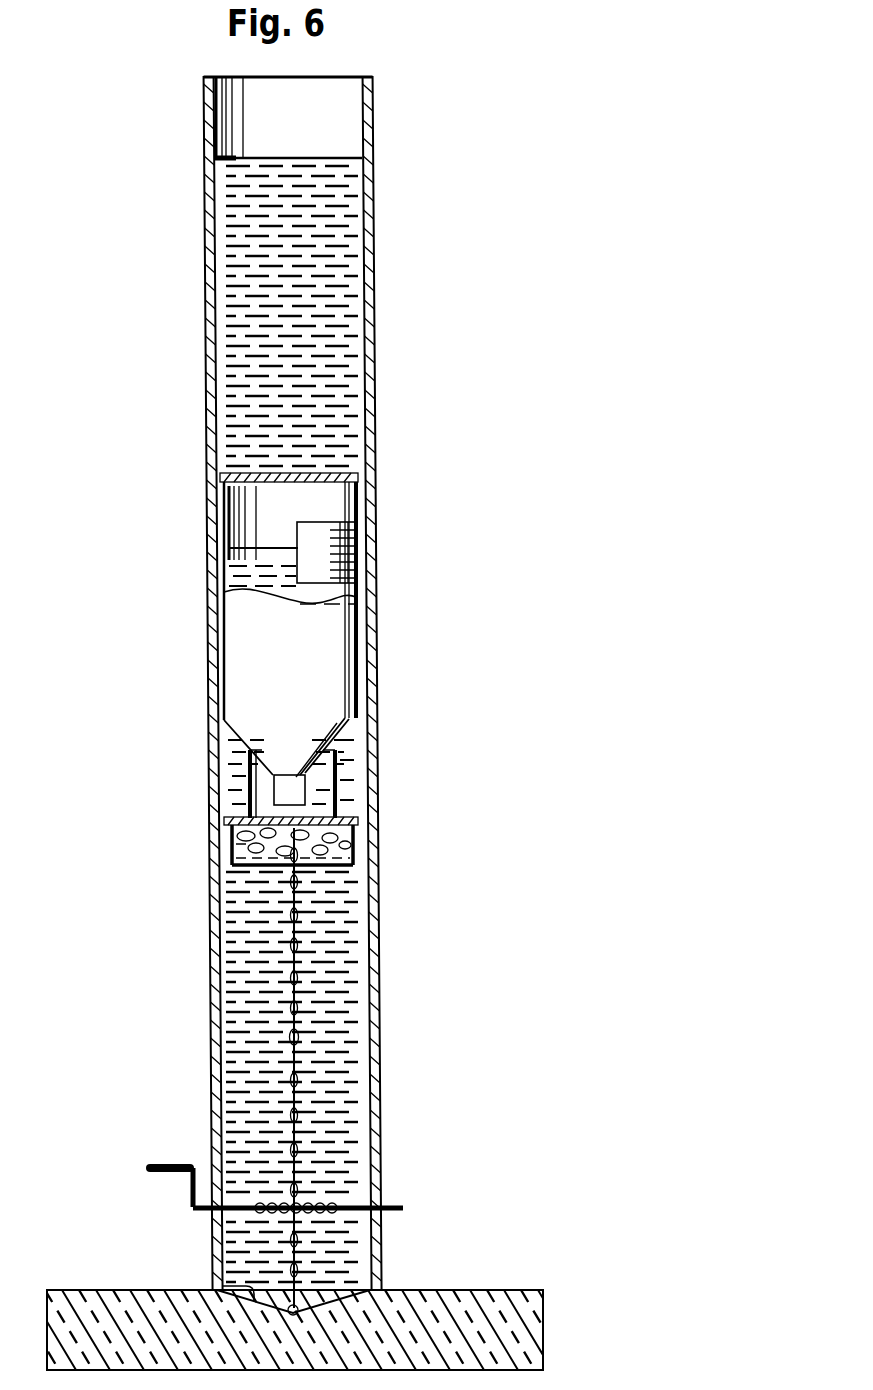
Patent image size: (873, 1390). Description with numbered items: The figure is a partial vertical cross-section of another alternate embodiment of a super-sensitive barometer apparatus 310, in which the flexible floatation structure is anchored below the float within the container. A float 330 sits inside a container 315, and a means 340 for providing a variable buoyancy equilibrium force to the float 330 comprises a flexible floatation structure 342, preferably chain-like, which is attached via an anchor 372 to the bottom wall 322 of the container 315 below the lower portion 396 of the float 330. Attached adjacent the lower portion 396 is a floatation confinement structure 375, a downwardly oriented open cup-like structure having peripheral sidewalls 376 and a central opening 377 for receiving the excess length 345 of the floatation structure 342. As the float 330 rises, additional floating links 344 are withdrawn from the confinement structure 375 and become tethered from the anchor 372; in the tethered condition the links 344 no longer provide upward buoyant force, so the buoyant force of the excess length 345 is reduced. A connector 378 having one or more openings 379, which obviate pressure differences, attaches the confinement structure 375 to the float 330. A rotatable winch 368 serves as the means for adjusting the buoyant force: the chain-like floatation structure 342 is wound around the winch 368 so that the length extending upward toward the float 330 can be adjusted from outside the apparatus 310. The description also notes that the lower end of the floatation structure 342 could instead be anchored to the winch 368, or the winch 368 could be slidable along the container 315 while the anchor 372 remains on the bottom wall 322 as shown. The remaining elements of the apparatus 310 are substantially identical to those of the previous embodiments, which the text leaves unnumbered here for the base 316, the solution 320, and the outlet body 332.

The apparatus 310 is at (172, 560).
The container 315 is at (380, 292).
The base 316 is at (500, 1290).
The solution 320 is at (340, 347).
The bottom wall 322 is at (250, 1293).
The float 330 is at (362, 488).
The outlet body 332 is at (245, 808).
The means for providing a variable buoyancy equilibrium force 340 is at (305, 963).
The flexible floatation structure 342 is at (300, 1043).
The floating links 344 is at (300, 945).
The excess length 345 is at (256, 855).
The winch 368 is at (160, 1188).
The anchor 372 is at (300, 1308).
The floatation confinement structure 375 is at (365, 828).
The peripheral sidewalls 376 is at (360, 850).
The central opening 377 is at (322, 862).
The connector 378 is at (343, 762).
The openings 379 is at (338, 788).
The lower portion 396 is at (228, 745).